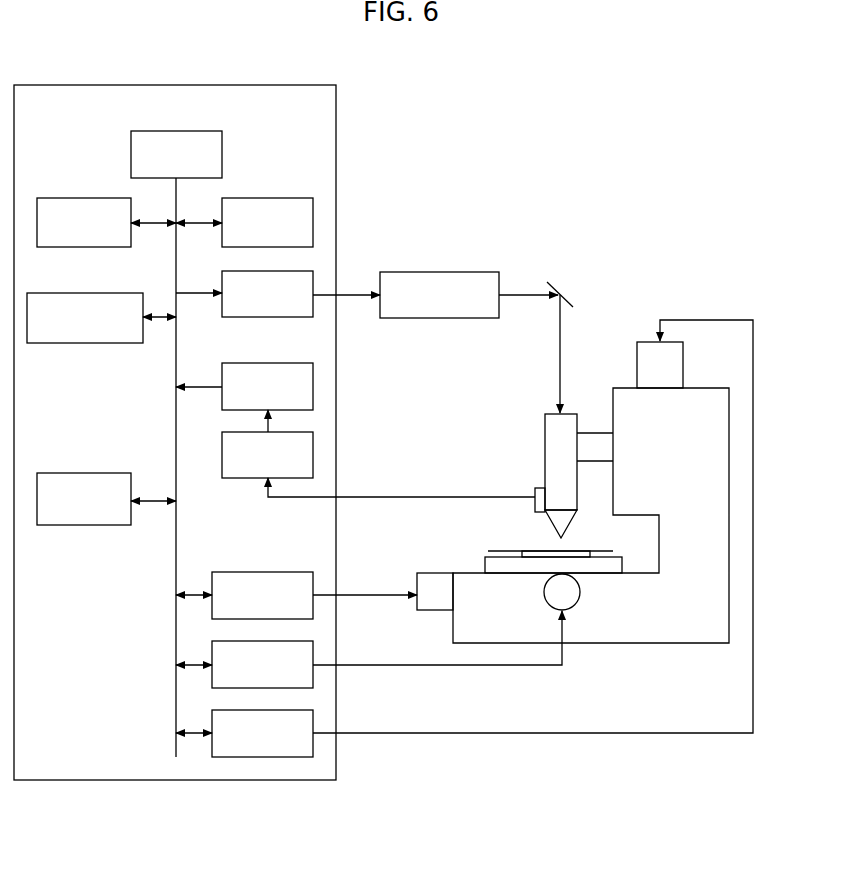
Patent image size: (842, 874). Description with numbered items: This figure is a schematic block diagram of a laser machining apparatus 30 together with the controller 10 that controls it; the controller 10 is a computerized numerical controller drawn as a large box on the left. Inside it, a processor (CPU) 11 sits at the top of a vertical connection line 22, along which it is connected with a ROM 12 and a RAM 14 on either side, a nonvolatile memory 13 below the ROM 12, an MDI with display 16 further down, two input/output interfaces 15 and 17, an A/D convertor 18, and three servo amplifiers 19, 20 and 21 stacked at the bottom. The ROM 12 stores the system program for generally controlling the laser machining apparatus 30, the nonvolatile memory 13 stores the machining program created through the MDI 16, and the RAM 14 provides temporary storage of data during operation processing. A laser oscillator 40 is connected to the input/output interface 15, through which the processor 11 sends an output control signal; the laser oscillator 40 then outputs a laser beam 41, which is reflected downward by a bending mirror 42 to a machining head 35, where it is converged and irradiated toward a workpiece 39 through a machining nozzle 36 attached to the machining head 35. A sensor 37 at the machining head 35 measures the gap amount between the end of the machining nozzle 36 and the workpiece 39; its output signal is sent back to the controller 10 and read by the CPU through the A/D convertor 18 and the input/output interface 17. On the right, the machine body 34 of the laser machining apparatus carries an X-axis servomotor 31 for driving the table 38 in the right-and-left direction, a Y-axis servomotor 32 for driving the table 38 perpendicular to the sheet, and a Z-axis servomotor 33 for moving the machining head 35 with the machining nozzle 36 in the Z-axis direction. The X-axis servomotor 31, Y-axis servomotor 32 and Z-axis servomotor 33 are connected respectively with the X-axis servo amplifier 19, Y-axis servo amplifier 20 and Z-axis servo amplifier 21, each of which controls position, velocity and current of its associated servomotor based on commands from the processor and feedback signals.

The controller 10 is at (336, 130).
The processor (CPU) 11 is at (168, 131).
The ROM 12 is at (82, 198).
The nonvolatile memory 13 is at (103, 293).
The RAM 14 is at (258, 198).
The input/output interface 15 is at (307, 263).
The MDI with display 16 is at (77, 473).
The input/output interface 17 is at (272, 363).
The A/D convertor 18 is at (250, 478).
The X-axis servo amplifier 19 is at (268, 572).
The Y-axis servo amplifier 20 is at (313, 658).
The Z-axis servo amplifier 21 is at (313, 727).
The bus 22 is at (176, 636).
The laser machining apparatus 30 is at (680, 270).
The X-axis servomotor 31 is at (432, 573).
The Y-axis servomotor 32 is at (580, 603).
The Z-axis servomotor 33 is at (645, 342).
The machine body 34 is at (729, 496).
The machining head 35 is at (545, 432).
The machining nozzle 36 is at (546, 514).
The sensor 37 is at (535, 489).
The table 38 is at (622, 560).
The workpiece 39 is at (500, 548).
The laser oscillator 40 is at (437, 272).
The laser beam 41 is at (559, 350).
The bending mirror 42 is at (562, 281).